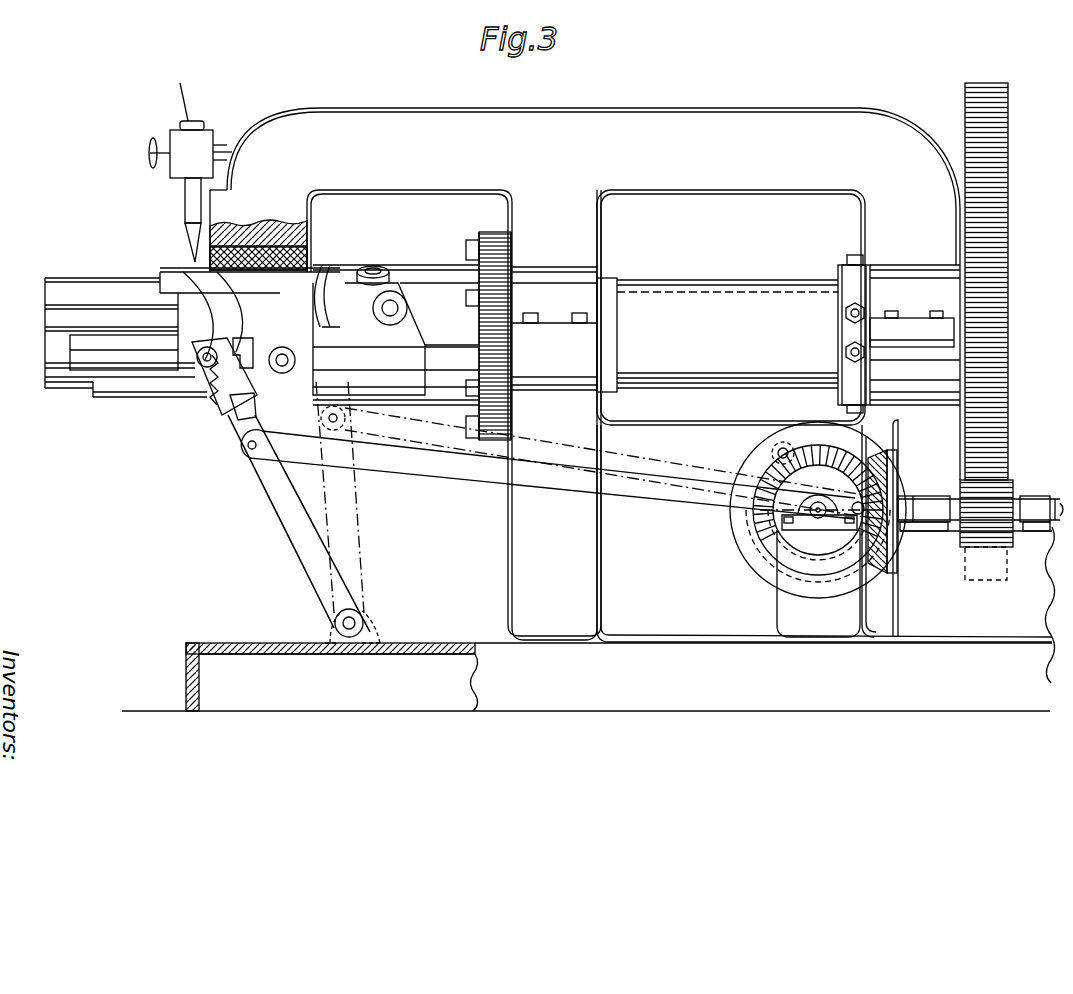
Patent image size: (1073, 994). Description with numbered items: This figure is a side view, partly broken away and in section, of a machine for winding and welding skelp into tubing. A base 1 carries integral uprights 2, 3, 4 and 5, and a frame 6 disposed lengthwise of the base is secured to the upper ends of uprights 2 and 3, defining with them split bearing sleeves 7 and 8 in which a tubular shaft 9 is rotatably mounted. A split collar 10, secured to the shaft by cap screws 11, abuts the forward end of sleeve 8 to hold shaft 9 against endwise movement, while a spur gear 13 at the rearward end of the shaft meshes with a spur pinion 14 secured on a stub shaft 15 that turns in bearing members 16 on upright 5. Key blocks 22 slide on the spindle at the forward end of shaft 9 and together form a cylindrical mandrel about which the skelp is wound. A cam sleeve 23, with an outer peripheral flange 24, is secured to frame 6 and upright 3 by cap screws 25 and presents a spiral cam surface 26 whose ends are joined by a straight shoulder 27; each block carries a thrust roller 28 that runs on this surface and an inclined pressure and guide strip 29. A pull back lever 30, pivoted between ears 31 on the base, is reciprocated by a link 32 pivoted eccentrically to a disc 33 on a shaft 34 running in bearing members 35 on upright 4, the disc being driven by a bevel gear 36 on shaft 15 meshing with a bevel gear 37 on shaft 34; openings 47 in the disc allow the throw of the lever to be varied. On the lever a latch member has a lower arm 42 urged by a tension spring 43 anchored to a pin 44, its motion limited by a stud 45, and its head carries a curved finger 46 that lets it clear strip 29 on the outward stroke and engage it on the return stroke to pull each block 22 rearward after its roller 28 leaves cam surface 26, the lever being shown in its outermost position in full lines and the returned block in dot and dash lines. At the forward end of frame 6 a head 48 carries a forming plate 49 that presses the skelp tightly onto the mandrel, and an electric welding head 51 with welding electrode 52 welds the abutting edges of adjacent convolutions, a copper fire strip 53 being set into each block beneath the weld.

The base 1 is at (882, 700).
The upright 2 is at (943, 443).
The upright 3 is at (604, 562).
The upright 4 is at (790, 610).
The upright 5 is at (966, 604).
The frame 6 is at (483, 112).
The split bearing sleeve 7 is at (600, 272).
The split bearing sleeve 8 is at (886, 305).
The tubular shaft 9 is at (708, 290).
The split collar 10 is at (838, 262).
The cap screws 11 is at (846, 350).
The spur gear 13 is at (1005, 150).
The spur pinion 14 is at (988, 542).
The stub shaft 15 is at (1011, 505).
The bearing members 16 is at (916, 524).
The key blocks 22 is at (187, 321).
The cam sleeve 23 is at (423, 266).
The outer peripheral flange 24 is at (511, 236).
The cap screws 25 is at (472, 256).
The cam surface 26 is at (396, 283).
The straight shoulder 27 is at (420, 396).
The thrust roller 28 is at (282, 374).
The pressure and guide strip 29 is at (332, 270).
The pull back lever 30 is at (282, 513).
The ears 31 is at (365, 626).
The link 32 is at (408, 468).
The disc 33 is at (770, 476).
The shaft 34 is at (820, 512).
The bearing members 35 is at (800, 523).
The bevel gear 36 is at (888, 557).
The bevel gear 37 is at (801, 458).
The lower arm 42 is at (229, 403).
The tension spring 43 is at (214, 392).
The pin 44 is at (145, 375).
The stud 45 is at (246, 418).
The finger 46 is at (204, 362).
The openings 47 is at (805, 469).
The head 48 is at (250, 227).
The forming plate 49 is at (310, 240).
The electric welding head 51 is at (186, 199).
The welding electrode 52 is at (191, 263).
The fire strip 53 is at (200, 268).